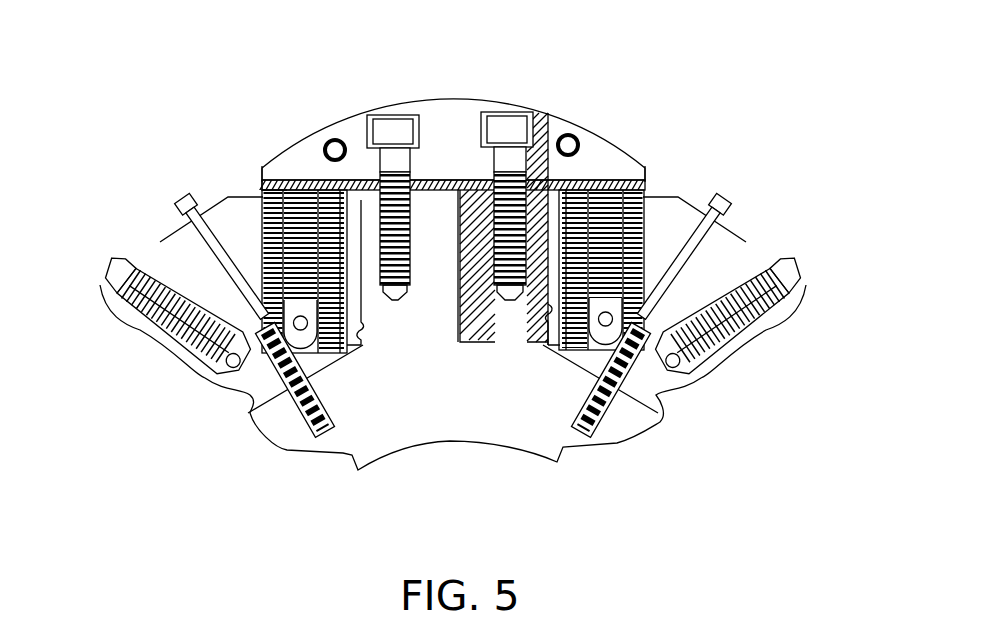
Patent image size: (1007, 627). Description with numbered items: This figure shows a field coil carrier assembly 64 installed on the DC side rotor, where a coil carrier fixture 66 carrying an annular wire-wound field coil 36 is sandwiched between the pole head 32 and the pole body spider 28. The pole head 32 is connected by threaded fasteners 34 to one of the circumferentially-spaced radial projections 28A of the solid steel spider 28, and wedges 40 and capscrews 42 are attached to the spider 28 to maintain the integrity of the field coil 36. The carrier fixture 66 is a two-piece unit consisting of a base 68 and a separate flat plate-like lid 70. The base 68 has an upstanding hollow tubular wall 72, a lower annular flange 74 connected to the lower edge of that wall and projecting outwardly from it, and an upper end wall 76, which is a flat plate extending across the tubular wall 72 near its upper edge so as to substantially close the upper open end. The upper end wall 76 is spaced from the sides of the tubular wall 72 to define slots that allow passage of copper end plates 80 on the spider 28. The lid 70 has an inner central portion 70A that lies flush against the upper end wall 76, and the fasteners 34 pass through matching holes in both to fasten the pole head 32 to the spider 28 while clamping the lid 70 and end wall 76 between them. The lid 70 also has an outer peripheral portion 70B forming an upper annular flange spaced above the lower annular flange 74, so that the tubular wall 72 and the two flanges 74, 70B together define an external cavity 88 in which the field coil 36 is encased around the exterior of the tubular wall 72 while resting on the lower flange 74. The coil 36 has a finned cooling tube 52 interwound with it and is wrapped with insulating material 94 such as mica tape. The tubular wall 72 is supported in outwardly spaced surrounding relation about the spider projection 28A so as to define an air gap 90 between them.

The pole body spider 28 is at (440, 427).
The radial projection 28A is at (470, 203).
The pole head 32 is at (342, 120).
The threaded fasteners 34 is at (390, 110).
The field coil 36 is at (277, 168).
The wedges 40 is at (175, 247).
The capscrews 42 is at (183, 200).
The finned-cooling tube 52 is at (338, 400).
The field coil carrier assembly 64 is at (657, 127).
The coil carrier fixture 66 is at (262, 166).
The base 68 is at (352, 297).
The lid 70 is at (316, 168).
The inner central portion 70A is at (437, 180).
The outer peripheral portion 70B is at (586, 186).
The tubular wall 72 is at (407, 288).
The lower annular flange 74 is at (318, 355).
The upper end wall 76 is at (460, 203).
The copper end plates 80 is at (548, 158).
The external cavity 88 is at (643, 183).
The air gap 90 is at (547, 348).
The insulating material 94 is at (255, 400).